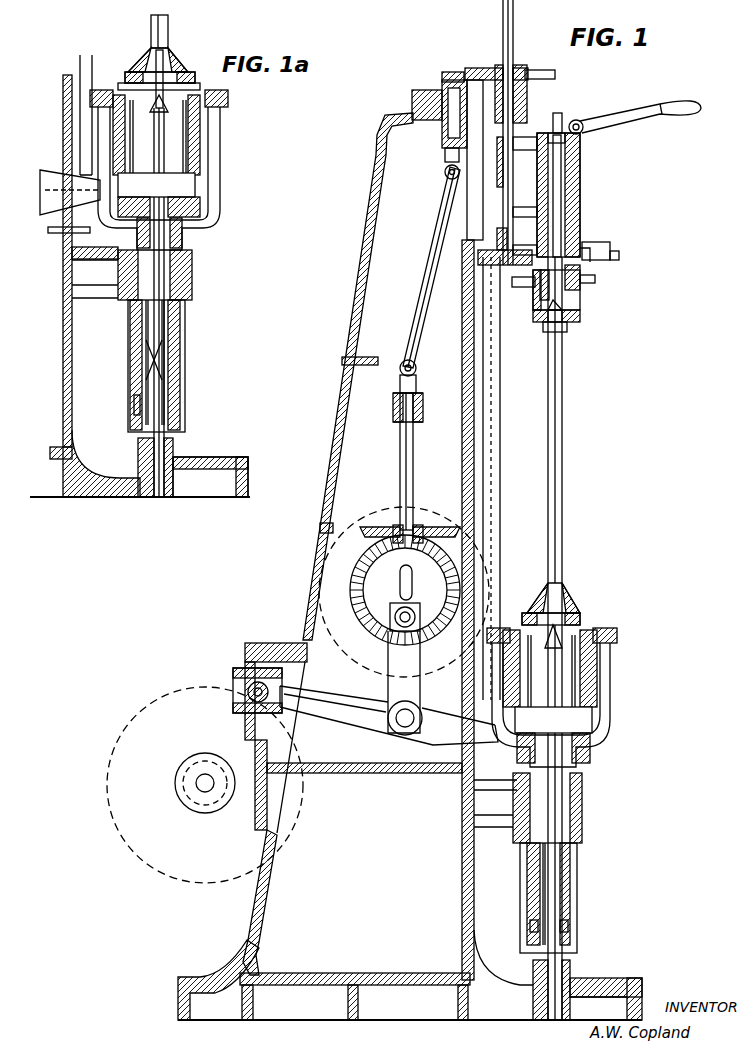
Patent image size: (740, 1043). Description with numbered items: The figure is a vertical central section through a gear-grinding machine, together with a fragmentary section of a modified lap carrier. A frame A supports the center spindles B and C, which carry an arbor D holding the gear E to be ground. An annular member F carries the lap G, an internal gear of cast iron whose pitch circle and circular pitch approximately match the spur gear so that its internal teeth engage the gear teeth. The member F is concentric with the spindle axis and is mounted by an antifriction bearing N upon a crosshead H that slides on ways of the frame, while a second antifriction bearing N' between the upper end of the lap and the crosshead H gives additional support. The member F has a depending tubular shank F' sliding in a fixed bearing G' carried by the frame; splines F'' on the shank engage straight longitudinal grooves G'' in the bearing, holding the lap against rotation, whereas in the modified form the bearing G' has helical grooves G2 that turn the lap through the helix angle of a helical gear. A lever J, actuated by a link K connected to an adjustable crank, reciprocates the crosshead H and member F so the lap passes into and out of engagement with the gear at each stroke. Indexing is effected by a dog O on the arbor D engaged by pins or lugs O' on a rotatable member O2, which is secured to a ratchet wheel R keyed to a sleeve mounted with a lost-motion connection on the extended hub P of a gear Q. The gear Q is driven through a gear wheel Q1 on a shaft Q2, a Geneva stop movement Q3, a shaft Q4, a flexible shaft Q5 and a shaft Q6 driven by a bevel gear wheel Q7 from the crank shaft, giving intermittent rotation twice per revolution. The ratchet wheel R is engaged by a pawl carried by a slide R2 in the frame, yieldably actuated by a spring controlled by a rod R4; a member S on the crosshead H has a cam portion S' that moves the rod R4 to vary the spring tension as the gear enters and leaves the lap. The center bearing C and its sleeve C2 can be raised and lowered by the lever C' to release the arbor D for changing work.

In FIG. 1A, the frame A is at (63, 288).
In FIG. 1, the frame A is at (340, 419).
In FIG. 1A, the center spindle B is at (166, 104).
In FIG. 1, the center spindle B is at (563, 640).
In FIG. 1, the center spindle C is at (572, 185).
In FIG. 1, the lever C' is at (641, 108).
In FIG. 1, the sleeve C2 is at (581, 180).
In FIG. 1A, the arbor D is at (168, 30).
In FIG. 1, the arbor D is at (562, 379).
In FIG. 1A, the gear E is at (132, 72).
In FIG. 1, the gear E is at (578, 613).
In FIG. 1A, the annular member F is at (184, 201).
In FIG. 1, the annular member F is at (574, 718).
In FIG. 1A, the tubular shank F' is at (171, 275).
In FIG. 1, the tubular shank F' is at (565, 898).
In FIG. 1A, the splines F'' is at (113, 405).
In FIG. 1, the splines F'' is at (546, 929).
In FIG. 1A, the lap G is at (156, 146).
In FIG. 1, the lap G is at (572, 668).
In FIG. 1A, the fixed bearing G' is at (177, 365).
In FIG. 1, the fixed bearing G' is at (566, 810).
In FIG. 1A, the helical grooves G2 is at (180, 331).
In FIG. 1, the straight longitudinal grooves G'' is at (581, 894).
In FIG. 1A, the crosshead H is at (220, 214).
In FIG. 1, the crosshead H is at (610, 666).
In FIG. 1A, the lever J is at (58, 178).
In FIG. 1, the lever J is at (366, 736).
In FIG. 1, the link K is at (403, 663).
In FIG. 1A, the antifriction bearing N is at (187, 233).
In FIG. 1, the antifriction bearing N is at (578, 755).
In FIG. 1A, the antifriction bearing N' is at (172, 95).
In FIG. 1, the antifriction bearing N' is at (567, 630).
In FIG. 1, the dog O is at (568, 320).
In FIG. 1, the pins or lugs O' is at (562, 318).
In FIG. 1, the rotatable member O2 is at (580, 300).
In FIG. 1, the hub P is at (585, 250).
In FIG. 1, the gear Q is at (596, 278).
In FIG. 1, the gear wheel Q1 is at (480, 261).
In FIG. 1, the shaft Q2 is at (503, 218).
In FIG. 1, the Geneva stop movement Q3 is at (467, 70).
In FIG. 1, the shaft Q4 is at (448, 102).
In FIG. 1, the flexible shaft Q5 is at (433, 253).
In FIG. 1, the shaft Q6 is at (402, 451).
In FIG. 1, the bevel gear wheel Q7 is at (375, 529).
In FIG. 1, the ratchet wheel R is at (580, 290).
In FIG. 1, the slide R2 is at (608, 246).
In FIG. 1, the rod R4 is at (620, 256).
In FIG. 1, the member S is at (502, 478).
In FIG. 1, the cam portion S' is at (455, 610).